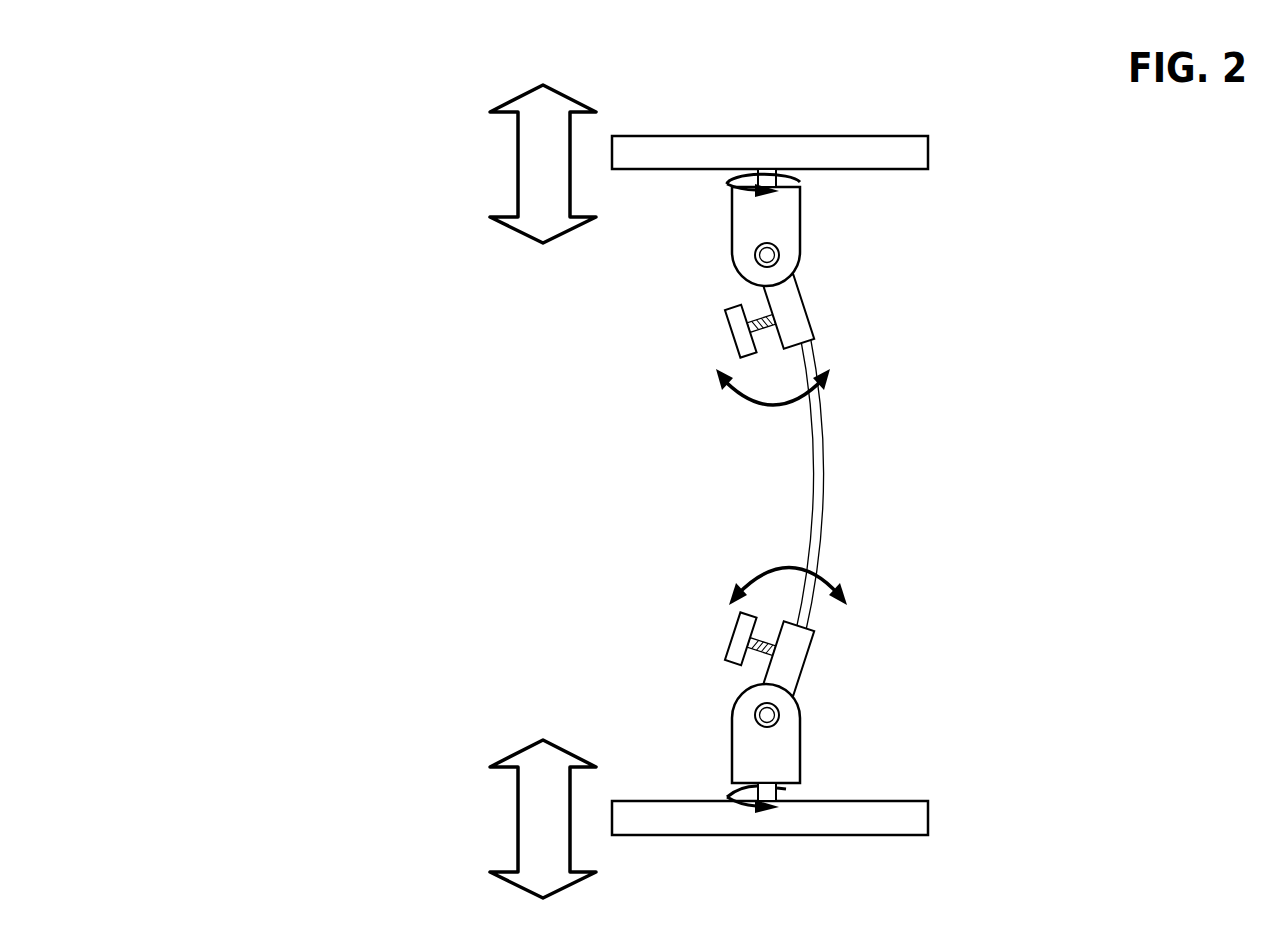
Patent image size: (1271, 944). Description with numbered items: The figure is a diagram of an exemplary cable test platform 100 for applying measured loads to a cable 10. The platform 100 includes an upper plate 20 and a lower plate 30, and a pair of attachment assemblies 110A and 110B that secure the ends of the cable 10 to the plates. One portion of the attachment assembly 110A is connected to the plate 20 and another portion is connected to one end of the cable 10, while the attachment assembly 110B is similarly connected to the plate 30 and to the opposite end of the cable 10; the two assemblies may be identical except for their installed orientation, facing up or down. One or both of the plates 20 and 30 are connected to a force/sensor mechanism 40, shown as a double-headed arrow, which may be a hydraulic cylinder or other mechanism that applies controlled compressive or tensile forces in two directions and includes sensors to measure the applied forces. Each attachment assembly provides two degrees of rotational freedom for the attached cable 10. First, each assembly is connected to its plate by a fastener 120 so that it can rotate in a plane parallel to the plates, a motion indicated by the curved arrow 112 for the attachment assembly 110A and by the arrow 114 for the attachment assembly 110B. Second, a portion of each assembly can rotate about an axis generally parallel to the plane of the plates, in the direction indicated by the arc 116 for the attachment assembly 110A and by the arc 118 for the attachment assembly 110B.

The cable test platform 100 is at (200, 75).
The cable 10 is at (822, 486).
The plate 20 is at (923, 152).
The plate 30 is at (923, 817).
The force/sensor mechanism 40 is at (556, 166).
The attachment assembly 110A is at (822, 283).
The attachment assembly 110B is at (825, 692).
The rotation in a plane parallel to plate 112 is at (729, 183).
The rotation in a plane parallel to plate 114 is at (738, 798).
The rotation direction 116 is at (742, 402).
The rotation direction 118 is at (750, 573).
The fastener 120 is at (798, 183).